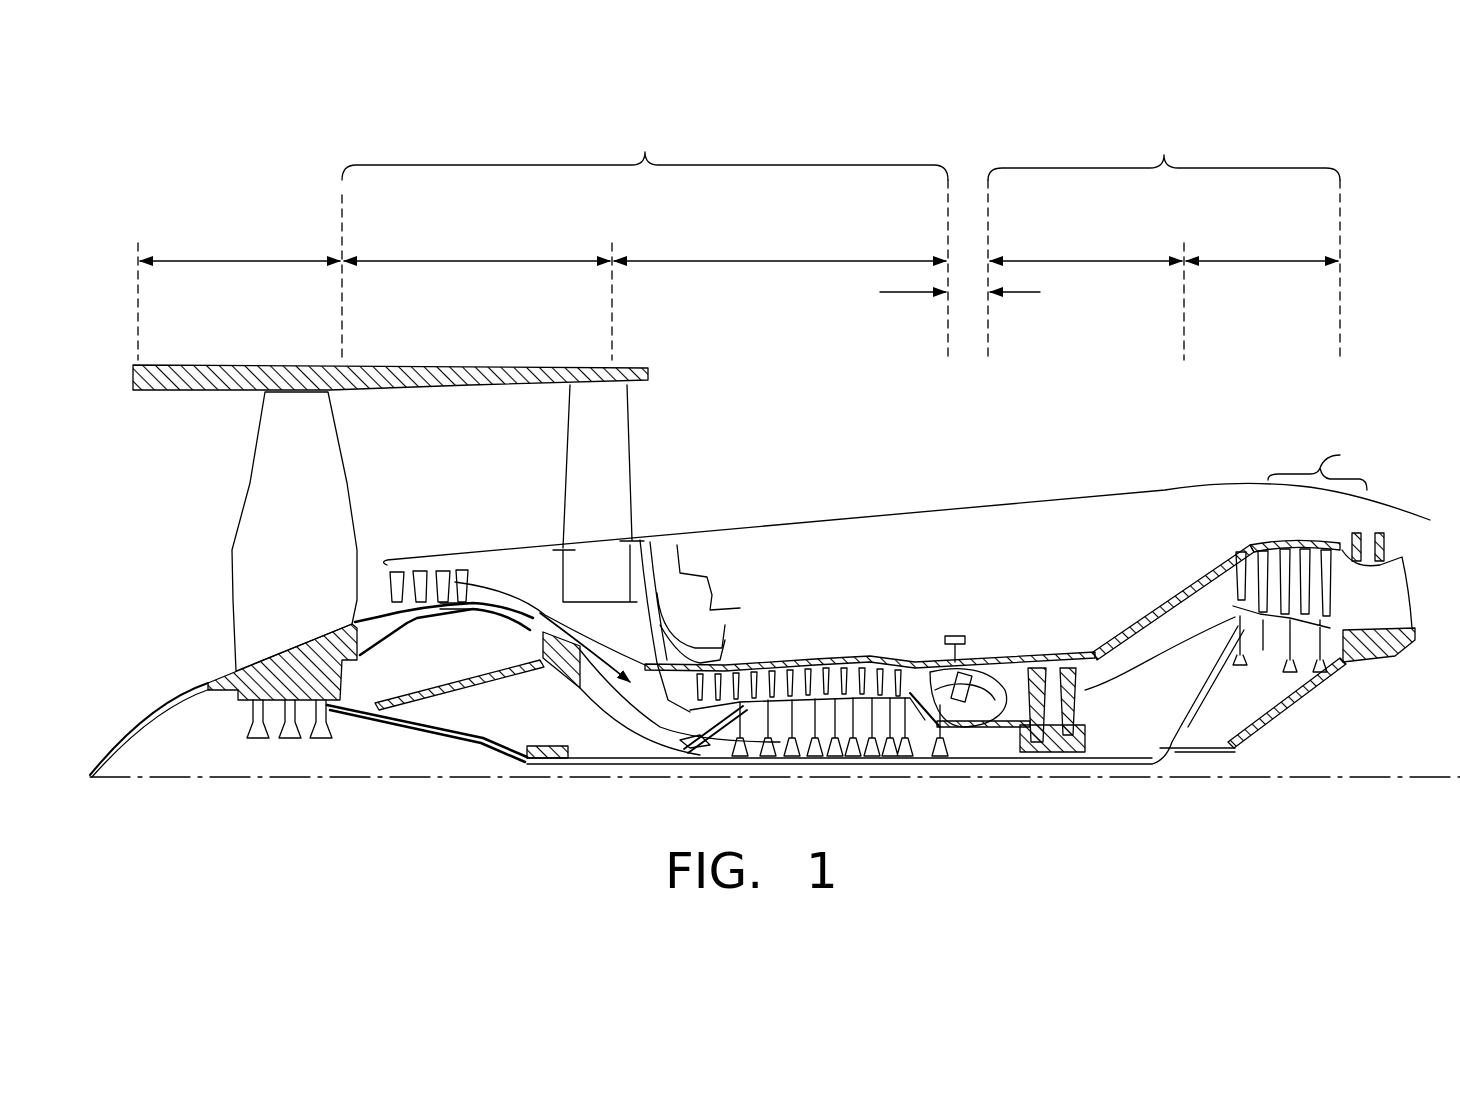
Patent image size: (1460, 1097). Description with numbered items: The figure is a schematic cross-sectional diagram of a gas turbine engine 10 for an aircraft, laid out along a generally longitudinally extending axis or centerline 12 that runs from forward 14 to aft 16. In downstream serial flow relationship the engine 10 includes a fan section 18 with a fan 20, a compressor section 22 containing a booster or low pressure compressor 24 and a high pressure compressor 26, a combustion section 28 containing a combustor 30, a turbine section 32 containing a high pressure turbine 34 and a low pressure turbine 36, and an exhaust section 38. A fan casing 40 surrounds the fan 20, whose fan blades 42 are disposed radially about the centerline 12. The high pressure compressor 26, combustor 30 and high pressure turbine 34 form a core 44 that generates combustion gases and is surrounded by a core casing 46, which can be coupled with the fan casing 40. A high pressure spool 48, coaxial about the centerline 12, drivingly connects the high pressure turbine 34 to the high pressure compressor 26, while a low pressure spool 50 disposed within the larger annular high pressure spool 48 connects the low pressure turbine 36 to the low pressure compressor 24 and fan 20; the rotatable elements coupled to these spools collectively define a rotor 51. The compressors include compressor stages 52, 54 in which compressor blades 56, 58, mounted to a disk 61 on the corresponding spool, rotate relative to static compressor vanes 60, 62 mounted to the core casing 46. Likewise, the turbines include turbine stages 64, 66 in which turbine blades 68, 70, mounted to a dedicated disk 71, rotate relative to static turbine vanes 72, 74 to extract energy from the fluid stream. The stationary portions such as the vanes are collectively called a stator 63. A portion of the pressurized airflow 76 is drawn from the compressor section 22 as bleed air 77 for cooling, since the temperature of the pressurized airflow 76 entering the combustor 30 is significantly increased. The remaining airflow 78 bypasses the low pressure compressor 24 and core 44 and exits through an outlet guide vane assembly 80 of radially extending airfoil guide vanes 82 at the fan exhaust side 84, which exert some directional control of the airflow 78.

The gas turbine engine 10 is at (1353, 292).
The centerline 12 is at (220, 780).
The forward 14 is at (170, 503).
The aft 16 is at (1445, 598).
The fan section 18 is at (245, 261).
The fan 20 is at (220, 626).
The compressor section 22 is at (645, 152).
The low pressure compressor 24 is at (490, 261).
The high pressure compressor 26 is at (790, 261).
The combustion section 28 is at (893, 292).
The combustor 30 is at (990, 673).
The turbine section 32 is at (1164, 155).
The high pressure turbine 34 is at (1086, 261).
The low pressure turbine 36 is at (1262, 261).
The exhaust section 38 is at (1432, 540).
The fan casing 40 is at (375, 365).
The fan blades 42 is at (310, 432).
The core 44 is at (908, 548).
The core casing 46 is at (1170, 590).
The high pressure spool 48 is at (958, 730).
The low pressure spool 50 is at (545, 760).
The rotor 51 is at (808, 766).
The compressor stages 52 is at (444, 555).
The compressor stages 54 is at (777, 580).
The compressor blades 56 is at (418, 578).
The compressor blades 58 is at (690, 670).
The static compressor vanes 60 is at (392, 578).
The disk 61 is at (437, 607).
The static compressor vanes 62 is at (683, 657).
The stator 63 is at (1243, 543).
The turbine stages 64 is at (1042, 652).
The turbine stages 66 is at (1322, 462).
The turbine blades 68 is at (1042, 670).
The turbine blades 70 is at (1325, 557).
The disk 71 is at (1053, 715).
The static turbine vanes 72 is at (1025, 670).
The static turbine vanes 74 is at (1310, 557).
The pressurized airflow 76 is at (592, 655).
The bleed air 77 is at (805, 668).
The airflow 78 is at (673, 438).
The outlet guide vane assembly 80 is at (640, 503).
The airfoil guide vanes 82 is at (577, 477).
The fan exhaust side 84 is at (647, 420).